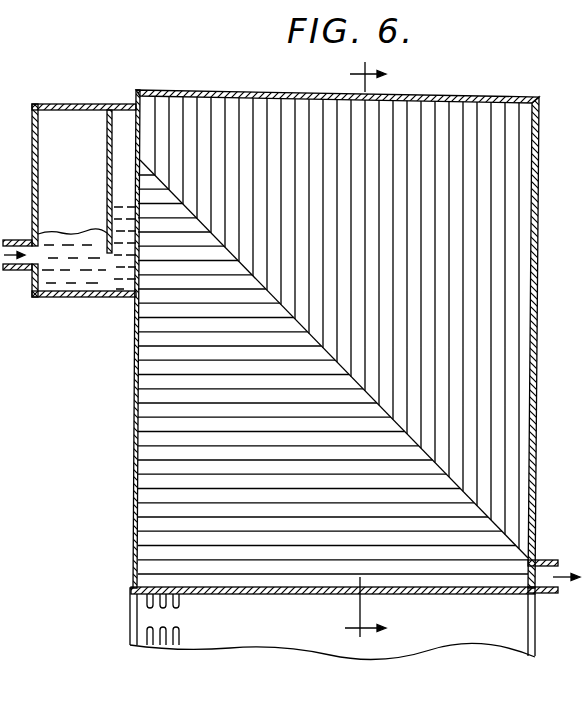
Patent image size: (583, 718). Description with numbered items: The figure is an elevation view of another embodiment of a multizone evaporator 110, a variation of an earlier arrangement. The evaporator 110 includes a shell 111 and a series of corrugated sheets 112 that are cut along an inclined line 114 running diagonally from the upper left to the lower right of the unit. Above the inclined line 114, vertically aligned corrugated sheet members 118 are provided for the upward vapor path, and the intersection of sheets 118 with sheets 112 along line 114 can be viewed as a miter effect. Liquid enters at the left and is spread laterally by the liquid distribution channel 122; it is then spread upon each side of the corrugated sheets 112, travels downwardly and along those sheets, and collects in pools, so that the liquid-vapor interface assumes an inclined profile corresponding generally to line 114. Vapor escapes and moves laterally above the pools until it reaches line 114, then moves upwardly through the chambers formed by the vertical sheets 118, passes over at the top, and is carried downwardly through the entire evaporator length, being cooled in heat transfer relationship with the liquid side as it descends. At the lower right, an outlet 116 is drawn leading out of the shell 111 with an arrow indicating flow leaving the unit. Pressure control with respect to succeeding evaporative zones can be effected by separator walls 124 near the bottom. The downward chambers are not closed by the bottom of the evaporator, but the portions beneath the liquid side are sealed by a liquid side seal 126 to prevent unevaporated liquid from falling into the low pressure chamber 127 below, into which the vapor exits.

The evaporator 110 is at (293, 378).
The shell 111 is at (541, 148).
The corrugated sheets 112 is at (150, 402).
The inclined line 114 is at (425, 450).
The outlet pipe 116 is at (548, 557).
The vertically aligned corrugated sheet members 118 is at (490, 217).
The liquid distribution channel 122 is at (72, 298).
The separator walls 124 is at (147, 603).
The liquid side seal 126 is at (217, 590).
The low pressure chamber 127 is at (298, 642).